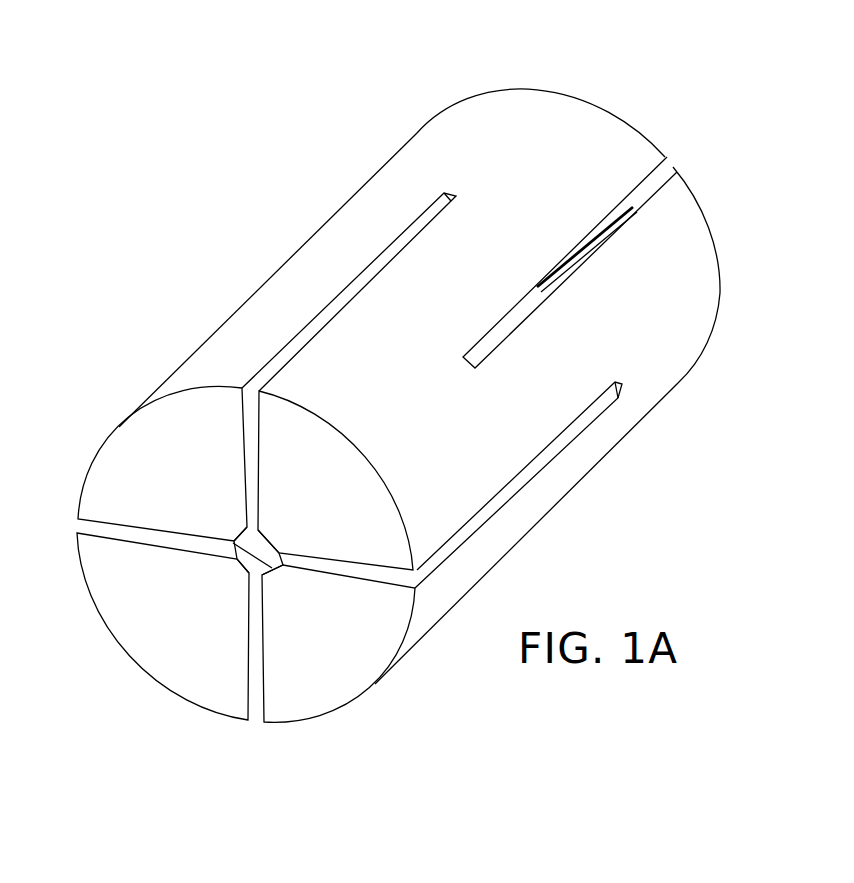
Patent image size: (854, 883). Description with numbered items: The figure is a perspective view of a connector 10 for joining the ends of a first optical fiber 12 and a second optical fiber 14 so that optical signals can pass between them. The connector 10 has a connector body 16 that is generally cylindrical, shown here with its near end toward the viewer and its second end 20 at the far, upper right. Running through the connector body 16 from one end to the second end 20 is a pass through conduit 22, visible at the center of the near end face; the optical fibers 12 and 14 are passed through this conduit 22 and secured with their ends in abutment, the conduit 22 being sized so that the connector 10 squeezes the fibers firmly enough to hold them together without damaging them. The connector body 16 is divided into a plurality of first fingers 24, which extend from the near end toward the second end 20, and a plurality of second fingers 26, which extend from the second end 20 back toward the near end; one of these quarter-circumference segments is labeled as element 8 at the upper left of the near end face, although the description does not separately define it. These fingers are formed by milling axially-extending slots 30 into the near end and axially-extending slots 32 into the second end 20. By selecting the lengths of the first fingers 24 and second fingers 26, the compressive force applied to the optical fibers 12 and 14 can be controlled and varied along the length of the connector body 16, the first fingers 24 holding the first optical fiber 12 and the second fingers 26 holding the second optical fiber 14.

The second optical fiber 14 is at (724, 78).
The upper left quadrant segment 8 is at (83, 487).
The first optical fiber 12 is at (62, 655).
The second end 20 is at (697, 198).
The connector body 16 is at (680, 388).
The second fingers 26 is at (720, 312).
The first fingers 24 is at (200, 350).
The connector 10 is at (387, 170).
The axially-extending slots 30 is at (362, 272).
The axially-extending slots 32 is at (622, 222).
The pass through conduit 22 is at (255, 553).